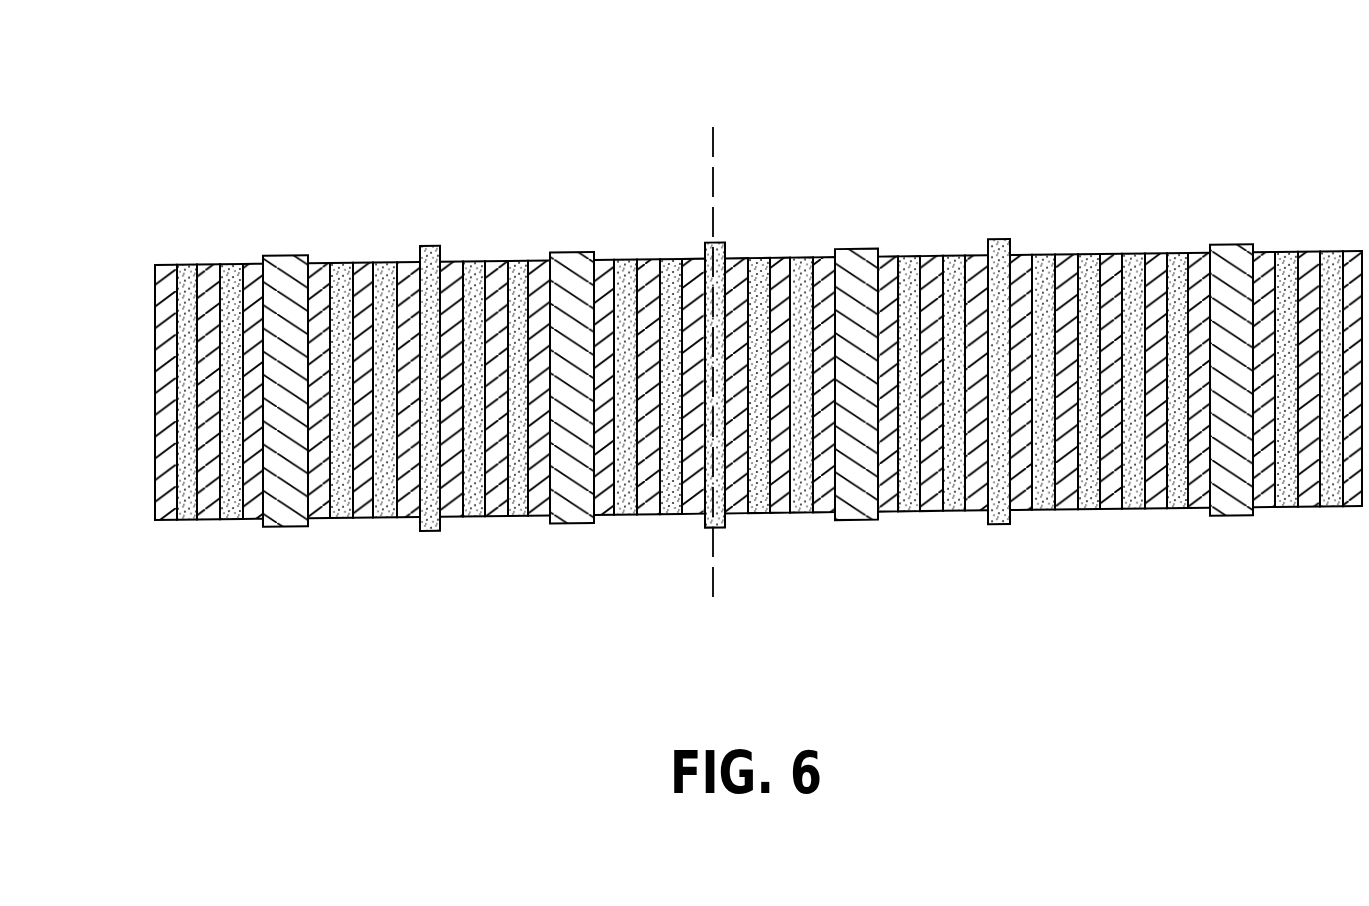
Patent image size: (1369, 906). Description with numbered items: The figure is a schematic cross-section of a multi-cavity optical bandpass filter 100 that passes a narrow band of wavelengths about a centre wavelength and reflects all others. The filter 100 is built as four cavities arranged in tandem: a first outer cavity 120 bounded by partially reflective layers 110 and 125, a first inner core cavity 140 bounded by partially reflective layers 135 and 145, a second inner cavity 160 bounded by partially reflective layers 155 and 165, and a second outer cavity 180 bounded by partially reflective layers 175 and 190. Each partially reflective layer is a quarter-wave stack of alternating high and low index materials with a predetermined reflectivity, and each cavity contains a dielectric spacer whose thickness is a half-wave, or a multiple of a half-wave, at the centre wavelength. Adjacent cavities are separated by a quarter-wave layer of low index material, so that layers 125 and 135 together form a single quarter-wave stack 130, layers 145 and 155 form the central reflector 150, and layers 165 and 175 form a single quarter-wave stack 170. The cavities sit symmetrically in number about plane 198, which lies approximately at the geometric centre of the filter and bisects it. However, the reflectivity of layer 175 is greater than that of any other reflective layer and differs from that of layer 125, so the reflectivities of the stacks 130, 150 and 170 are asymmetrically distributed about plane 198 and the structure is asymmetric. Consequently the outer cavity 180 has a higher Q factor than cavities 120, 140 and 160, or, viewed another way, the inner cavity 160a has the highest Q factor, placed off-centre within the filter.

The filter 100 is at (123, 318).
The partially reflective layer 110 is at (155, 530).
The first outer cavity 120 is at (157, 205).
The partially reflective layer 125 is at (417, 530).
The quarter-wave stack 130 is at (429, 453).
The partially reflective layer 135 is at (495, 425).
The first inner core cavity 140 is at (437, 200).
The partially reflective layer 145 is at (702, 527).
The reflector 150 is at (714, 449).
The partially reflective layer 155 is at (780, 421).
The second inner cavity 160 is at (725, 172).
The inner cavity 160a is at (903, 341).
The partially reflective layer 165 is at (990, 522).
The quarter-wave stack 170 is at (1045, 445).
The partially reflective layer 175 is at (1111, 416).
The second outer cavity 180 is at (1358, 168).
The partially reflective layer 190 is at (1362, 518).
The plane 198 is at (714, 202).